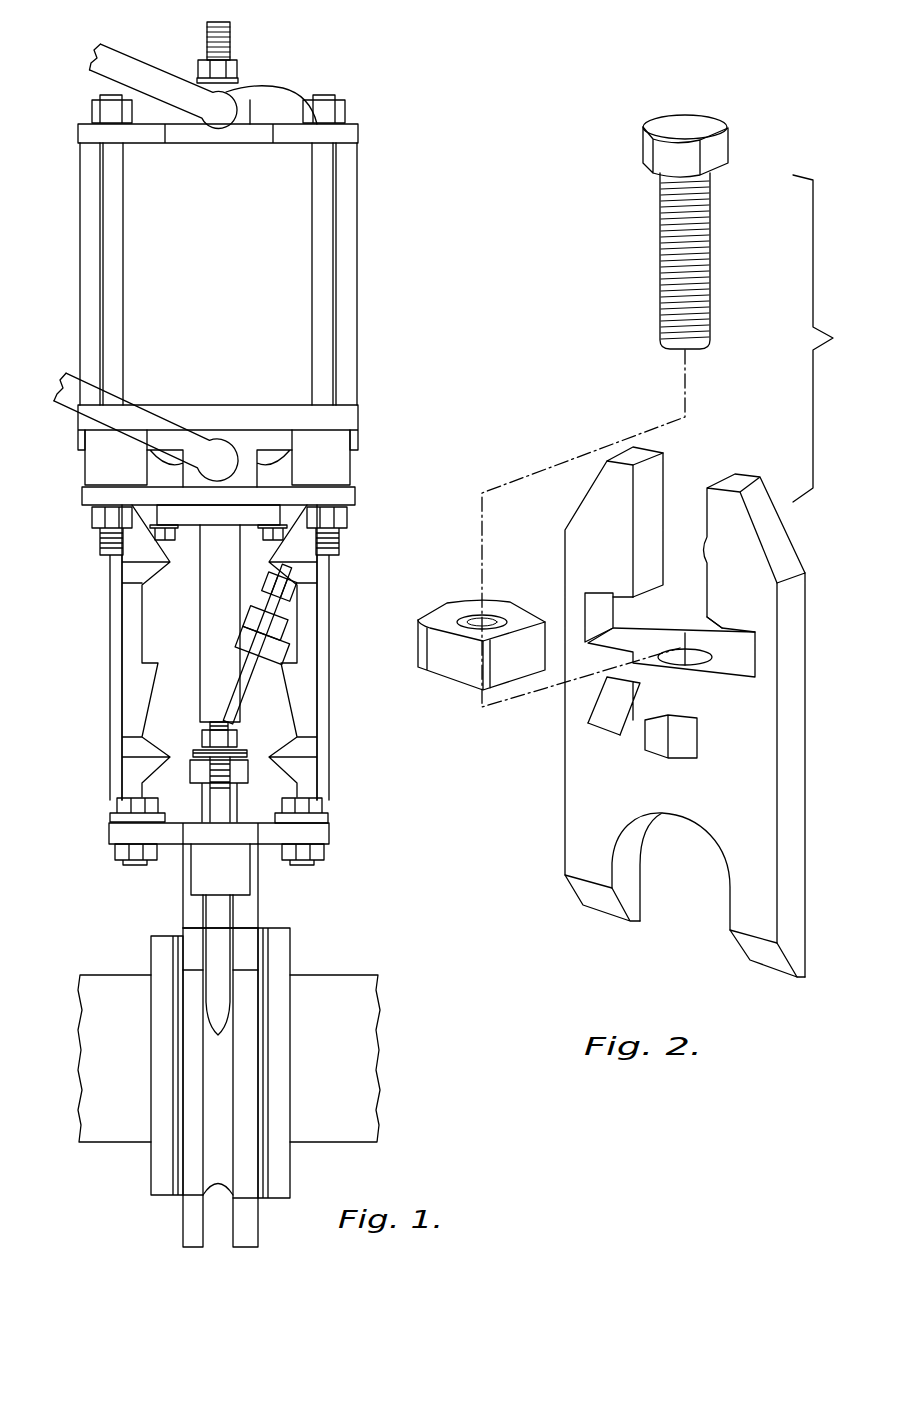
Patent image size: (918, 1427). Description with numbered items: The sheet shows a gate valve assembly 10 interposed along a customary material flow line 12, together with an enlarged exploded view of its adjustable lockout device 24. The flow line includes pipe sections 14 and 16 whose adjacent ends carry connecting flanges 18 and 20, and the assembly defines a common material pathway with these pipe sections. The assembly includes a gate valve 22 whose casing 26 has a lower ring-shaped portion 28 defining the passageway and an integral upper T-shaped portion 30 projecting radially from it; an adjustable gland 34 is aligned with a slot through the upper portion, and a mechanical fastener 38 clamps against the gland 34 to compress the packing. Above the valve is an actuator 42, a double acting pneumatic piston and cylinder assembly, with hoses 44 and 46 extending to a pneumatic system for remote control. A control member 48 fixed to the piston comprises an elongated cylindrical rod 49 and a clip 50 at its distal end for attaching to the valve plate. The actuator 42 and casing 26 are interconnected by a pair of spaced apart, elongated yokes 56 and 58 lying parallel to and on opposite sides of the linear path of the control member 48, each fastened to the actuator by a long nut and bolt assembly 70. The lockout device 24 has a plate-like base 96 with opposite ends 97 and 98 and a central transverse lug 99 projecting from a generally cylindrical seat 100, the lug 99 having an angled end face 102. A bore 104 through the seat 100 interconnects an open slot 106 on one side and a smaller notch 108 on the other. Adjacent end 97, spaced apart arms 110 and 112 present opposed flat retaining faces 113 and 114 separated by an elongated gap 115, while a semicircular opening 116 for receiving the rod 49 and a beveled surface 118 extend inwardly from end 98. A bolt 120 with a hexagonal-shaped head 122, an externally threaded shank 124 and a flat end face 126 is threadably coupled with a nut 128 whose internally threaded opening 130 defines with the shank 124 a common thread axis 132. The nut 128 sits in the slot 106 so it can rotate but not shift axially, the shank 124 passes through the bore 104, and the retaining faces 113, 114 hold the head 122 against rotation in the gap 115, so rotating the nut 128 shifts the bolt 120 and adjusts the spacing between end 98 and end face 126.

In FIG. 1, the gate valve assembly 10 is at (298, 70).
In FIG. 1, the material flow line 12 is at (360, 976).
In FIG. 1, the pipe section 14 is at (92, 1092).
In FIG. 1, the pipe section 16 is at (358, 1092).
In FIG. 1, the connecting flange 18 is at (158, 953).
In FIG. 1, the connecting flange 20 is at (280, 962).
In FIG. 1, the gate valve 22 is at (335, 821).
In FIG. 1, the adjustable lockout device 24 is at (292, 637).
In FIG. 2, the adjustable lockout device 24 is at (810, 651).
In FIG. 1, the casing 26 is at (255, 908).
In FIG. 1, the lower ring-shaped portion 28 is at (240, 1183).
In FIG. 1, the upper T-shaped portion 30 is at (193, 875).
In FIG. 1, the adjustable gland 34 is at (193, 775).
In FIG. 1, the mechanical fastener 38 is at (233, 742).
In FIG. 1, the actuator 42 is at (92, 215).
In FIG. 1, the hose 44 is at (130, 57).
In FIG. 1, the hose 46 is at (70, 397).
In FIG. 1, the control member 48 is at (197, 573).
In FIG. 1, the elongated cylindrical rod 49 is at (207, 648).
In FIG. 1, the clip 50 is at (200, 730).
In FIG. 1, the yoke 56 is at (108, 623).
In FIG. 1, the yoke 58 is at (328, 677).
In FIG. 1, the nut and bolt assembly 70 is at (335, 285).
In FIG. 1, the base 96 is at (247, 675).
In FIG. 2, the base 96 is at (810, 760).
In FIG. 2, the end 97 is at (810, 338).
In FIG. 2, the end 98 is at (803, 977).
In FIG. 2, the transverse lug 99 is at (633, 740).
In FIG. 2, the cylindrical seat 100 is at (715, 637).
In FIG. 2, the angled end face 102 is at (600, 712).
In FIG. 2, the bore 104 is at (697, 650).
In FIG. 2, the open slot 106 is at (613, 603).
In FIG. 2, the notch 108 is at (687, 733).
In FIG. 2, the arm 110 is at (603, 488).
In FIG. 2, the arm 112 is at (748, 547).
In FIG. 2, the retaining face 113 is at (653, 518).
In FIG. 2, the retaining face 114 is at (703, 540).
In FIG. 2, the elongated gap 115 is at (688, 482).
In FIG. 2, the semicircular opening 116 is at (690, 898).
In FIG. 2, the beveled surface 118 is at (603, 903).
In FIG. 1, the bolt 120 is at (293, 588).
In FIG. 2, the bolt 120 is at (710, 170).
In FIG. 2, the hexagonal-shaped head 122 is at (720, 143).
In FIG. 2, the externally threaded shank 124 is at (710, 275).
In FIG. 2, the flat end face 126 is at (688, 125).
In FIG. 1, the nut 128 is at (250, 615).
In FIG. 2, the nut 128 is at (437, 667).
In FIG. 2, the internally threaded opening 130 is at (473, 620).
In FIG. 2, the thread axis 132 is at (687, 368).